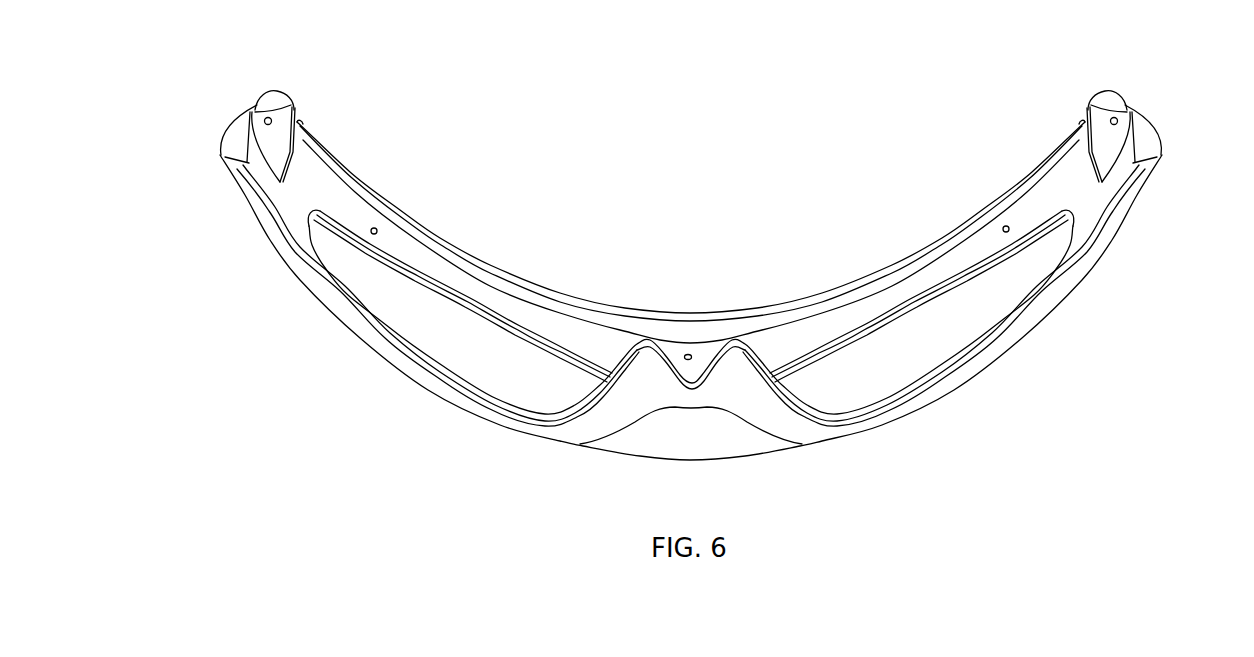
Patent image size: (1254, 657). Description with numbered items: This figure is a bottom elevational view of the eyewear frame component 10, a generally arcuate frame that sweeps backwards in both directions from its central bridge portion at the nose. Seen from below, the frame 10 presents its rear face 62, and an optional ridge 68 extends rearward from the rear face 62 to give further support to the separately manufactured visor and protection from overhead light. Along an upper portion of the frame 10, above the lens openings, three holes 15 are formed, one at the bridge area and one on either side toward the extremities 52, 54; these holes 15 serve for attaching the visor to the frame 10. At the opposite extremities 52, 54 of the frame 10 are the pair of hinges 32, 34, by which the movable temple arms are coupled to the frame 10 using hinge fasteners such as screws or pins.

The eyewear frame component 10 is at (1073, 293).
The holes 15 is at (379, 229).
The hinge 32 is at (288, 103).
The hinge 34 is at (1112, 95).
The extremity 52 is at (205, 169).
The extremity 54 is at (1179, 169).
The rear face 62 is at (1087, 198).
The ridge 68 is at (531, 289).